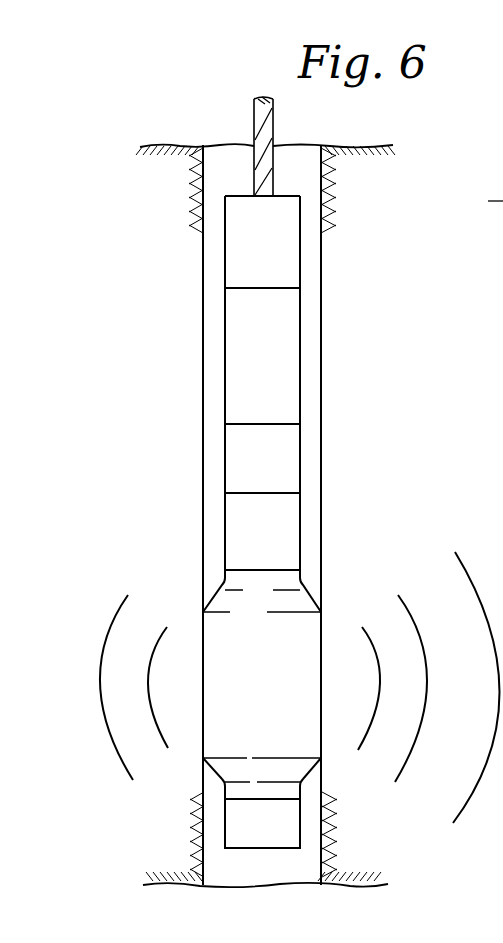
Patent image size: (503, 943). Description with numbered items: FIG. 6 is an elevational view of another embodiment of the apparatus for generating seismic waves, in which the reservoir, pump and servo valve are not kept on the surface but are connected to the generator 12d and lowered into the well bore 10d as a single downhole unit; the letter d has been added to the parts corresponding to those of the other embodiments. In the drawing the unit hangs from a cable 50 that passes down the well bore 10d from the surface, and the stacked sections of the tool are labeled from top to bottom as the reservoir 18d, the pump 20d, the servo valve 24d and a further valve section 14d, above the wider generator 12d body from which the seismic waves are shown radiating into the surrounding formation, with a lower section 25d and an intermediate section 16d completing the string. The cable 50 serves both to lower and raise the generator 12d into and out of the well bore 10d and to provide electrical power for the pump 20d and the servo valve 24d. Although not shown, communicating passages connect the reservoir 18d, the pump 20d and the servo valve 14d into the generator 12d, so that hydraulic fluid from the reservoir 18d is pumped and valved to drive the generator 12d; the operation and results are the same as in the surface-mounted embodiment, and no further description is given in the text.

The well bore 10d is at (322, 403).
The generator 12d is at (317, 600).
The servo valve 14d is at (272, 551).
The acoustic transmitter section 16d is at (282, 688).
The reservoir 18d is at (272, 260).
The pump 20d is at (270, 378).
The servo valve 24d is at (272, 478).
The lower tool section 25d is at (285, 837).
The cable 50 is at (253, 110).